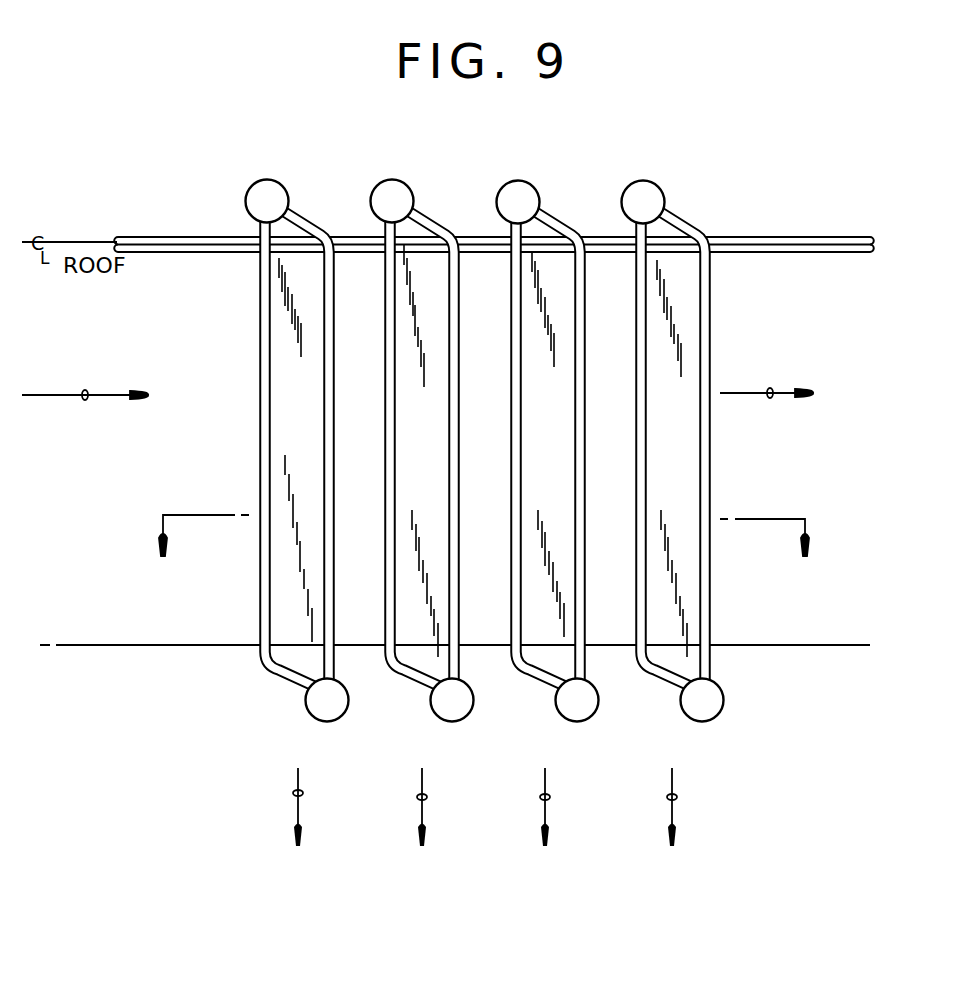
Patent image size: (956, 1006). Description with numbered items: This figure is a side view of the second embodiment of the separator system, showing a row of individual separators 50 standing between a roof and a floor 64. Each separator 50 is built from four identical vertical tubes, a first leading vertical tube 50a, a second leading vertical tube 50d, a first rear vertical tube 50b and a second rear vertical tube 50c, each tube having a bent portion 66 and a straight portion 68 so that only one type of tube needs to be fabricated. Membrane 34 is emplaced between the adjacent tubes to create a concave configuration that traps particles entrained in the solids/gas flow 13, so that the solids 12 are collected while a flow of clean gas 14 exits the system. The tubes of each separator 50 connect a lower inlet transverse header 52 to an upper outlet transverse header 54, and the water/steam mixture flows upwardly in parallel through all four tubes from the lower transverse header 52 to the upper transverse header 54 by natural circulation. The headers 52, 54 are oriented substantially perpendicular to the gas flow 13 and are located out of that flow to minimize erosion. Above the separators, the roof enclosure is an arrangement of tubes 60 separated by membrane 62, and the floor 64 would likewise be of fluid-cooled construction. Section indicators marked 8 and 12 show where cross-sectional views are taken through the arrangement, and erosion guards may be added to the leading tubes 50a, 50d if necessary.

The section line 8- 8 is at (482, 553).
The solids 12 is at (417, 797).
The solids/gas flow 13 is at (85, 398).
The clean gas 14 is at (770, 397).
The membrane 34 is at (283, 581).
The separator 50 is at (238, 336).
The first leading vertical tube 50a is at (221, 470).
The first rear vertical tube 50b is at (352, 427).
The second rear vertical tube 50c is at (331, 397).
The second leading vertical tube 50d is at (262, 440).
The lower transverse header 52 is at (443, 710).
The upper transverse header 54 is at (379, 193).
The tubes 60 is at (158, 237).
The membrane 62 is at (184, 246).
The floor 64 is at (199, 647).
The bent portion 66 is at (681, 229).
The straight portion 68 is at (706, 351).